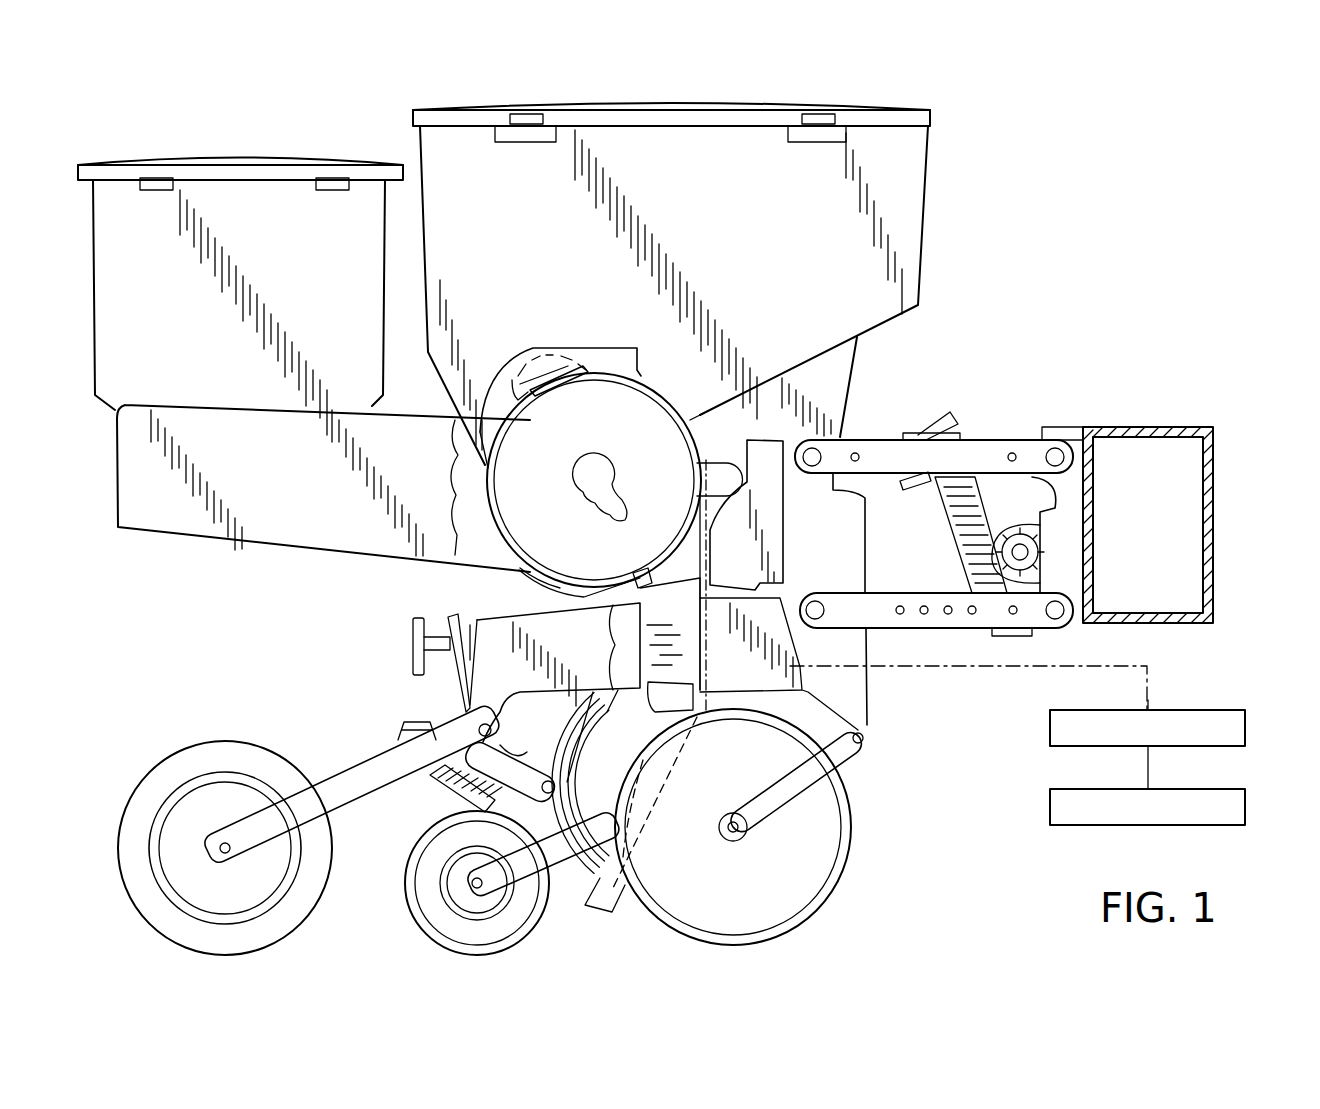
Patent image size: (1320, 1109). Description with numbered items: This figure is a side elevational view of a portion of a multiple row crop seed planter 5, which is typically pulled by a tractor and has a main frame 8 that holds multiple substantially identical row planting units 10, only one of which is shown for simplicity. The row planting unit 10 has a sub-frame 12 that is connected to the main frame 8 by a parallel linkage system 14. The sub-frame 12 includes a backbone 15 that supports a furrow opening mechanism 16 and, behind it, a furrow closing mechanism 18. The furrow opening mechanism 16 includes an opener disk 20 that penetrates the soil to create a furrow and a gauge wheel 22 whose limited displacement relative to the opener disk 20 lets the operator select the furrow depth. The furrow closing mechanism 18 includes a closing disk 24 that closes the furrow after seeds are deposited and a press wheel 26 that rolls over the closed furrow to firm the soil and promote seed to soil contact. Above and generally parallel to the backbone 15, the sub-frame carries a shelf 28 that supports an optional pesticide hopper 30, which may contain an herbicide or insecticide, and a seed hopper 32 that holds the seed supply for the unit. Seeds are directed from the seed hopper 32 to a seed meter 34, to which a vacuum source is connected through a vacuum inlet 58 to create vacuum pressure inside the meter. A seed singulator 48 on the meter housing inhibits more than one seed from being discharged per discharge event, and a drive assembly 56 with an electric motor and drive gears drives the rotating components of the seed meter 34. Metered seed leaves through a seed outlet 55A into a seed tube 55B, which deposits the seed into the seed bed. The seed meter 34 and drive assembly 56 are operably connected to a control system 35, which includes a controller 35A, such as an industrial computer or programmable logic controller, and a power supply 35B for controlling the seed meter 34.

The seed planter 5 is at (1036, 209).
The main frame 8 is at (1160, 425).
The row planting unit 10 is at (925, 288).
The sub-frame 12 is at (868, 544).
The parallel linkage system 14 is at (984, 440).
The backbone 15 is at (492, 624).
The furrow opening mechanism 16 is at (880, 840).
The furrow closing mechanism 18 is at (381, 882).
The opener disk 20 is at (798, 925).
The gauge wheel 22 is at (813, 877).
The closing disk 24 is at (512, 927).
The press wheel 26 is at (157, 780).
The shelf 28 is at (148, 515).
The pesticide hopper 30 is at (338, 278).
The seed hopper 32 is at (778, 203).
The seed meter 34 is at (636, 416).
The control system 35 is at (1247, 688).
The controller 35A is at (1050, 725).
The power supply 35B is at (1050, 802).
The seed singulator 48 is at (556, 354).
The seed outlet 55A is at (608, 594).
The seed tube 55B is at (663, 805).
The drive assembly 56 is at (720, 466).
The vacuum inlet 58 is at (585, 490).